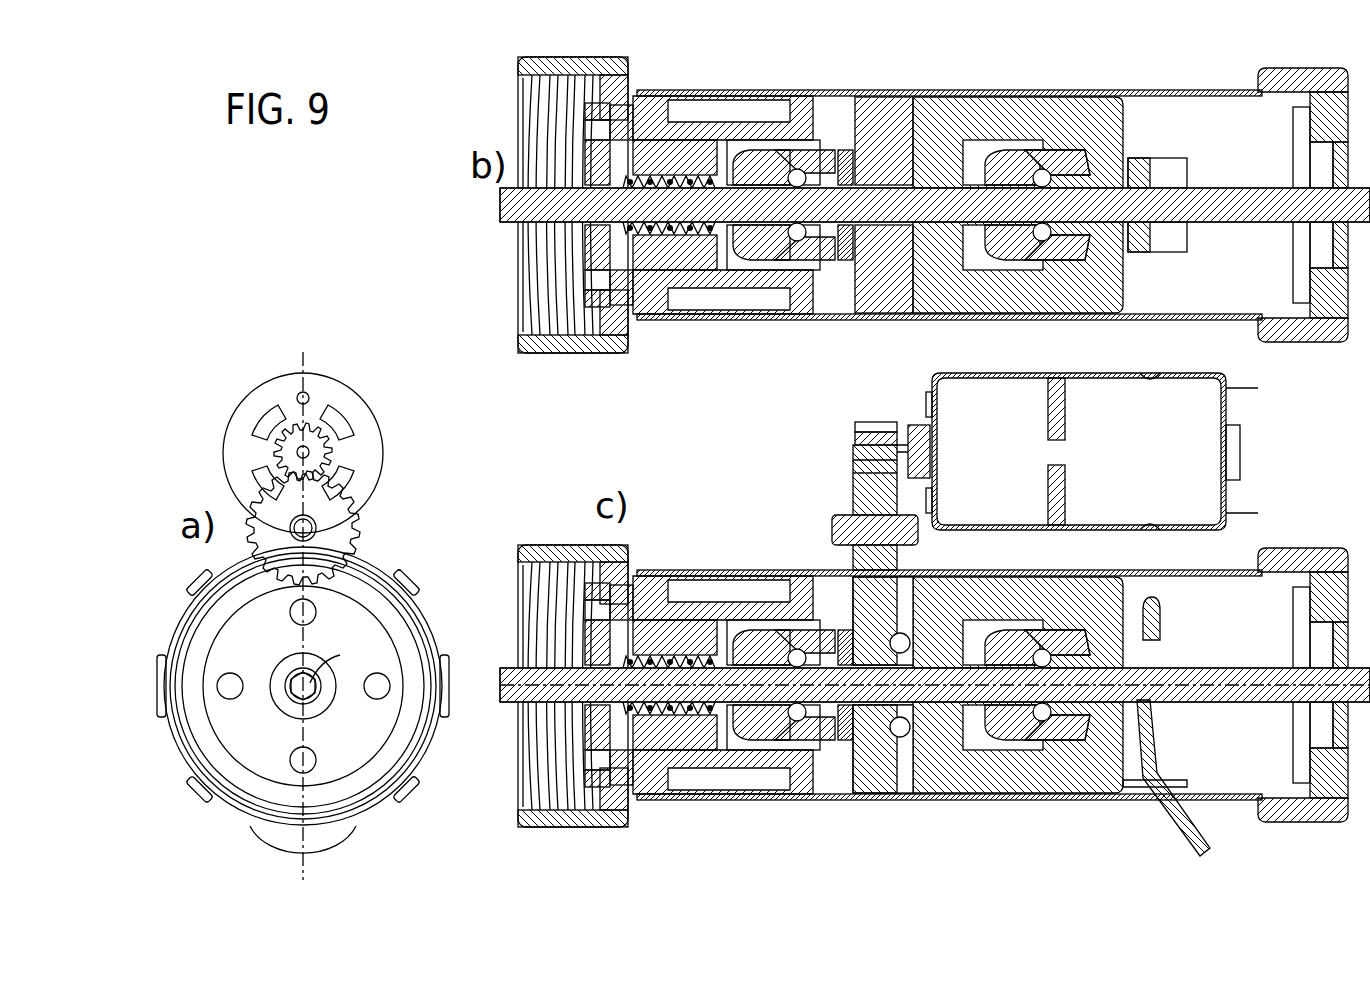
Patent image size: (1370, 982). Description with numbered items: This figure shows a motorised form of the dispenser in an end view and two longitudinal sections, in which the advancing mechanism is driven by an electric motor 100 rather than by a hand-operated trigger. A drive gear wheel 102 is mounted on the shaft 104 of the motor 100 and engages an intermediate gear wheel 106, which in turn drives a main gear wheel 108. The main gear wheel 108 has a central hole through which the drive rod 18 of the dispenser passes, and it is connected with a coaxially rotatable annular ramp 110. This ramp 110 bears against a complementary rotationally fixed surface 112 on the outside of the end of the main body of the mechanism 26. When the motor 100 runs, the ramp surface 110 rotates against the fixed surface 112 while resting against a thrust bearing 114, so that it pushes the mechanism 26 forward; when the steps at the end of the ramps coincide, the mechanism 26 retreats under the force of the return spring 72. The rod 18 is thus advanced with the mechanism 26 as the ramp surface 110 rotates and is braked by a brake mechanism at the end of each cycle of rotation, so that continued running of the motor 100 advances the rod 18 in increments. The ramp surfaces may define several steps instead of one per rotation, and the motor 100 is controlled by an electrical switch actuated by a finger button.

The drive rod 18 is at (505, 210).
The mechanism 26 is at (754, 611).
The return spring 72 is at (680, 232).
The electric motor 100 is at (355, 395).
The drive gear wheel 102 is at (325, 440).
The shaft 104 is at (898, 445).
The intermediate gear wheel 106 is at (335, 526).
The main gear wheel 108 is at (875, 300).
The annular ramp 110 is at (835, 265).
The rotationally fixed surface 112 is at (833, 160).
The thrust bearing 114 is at (942, 638).